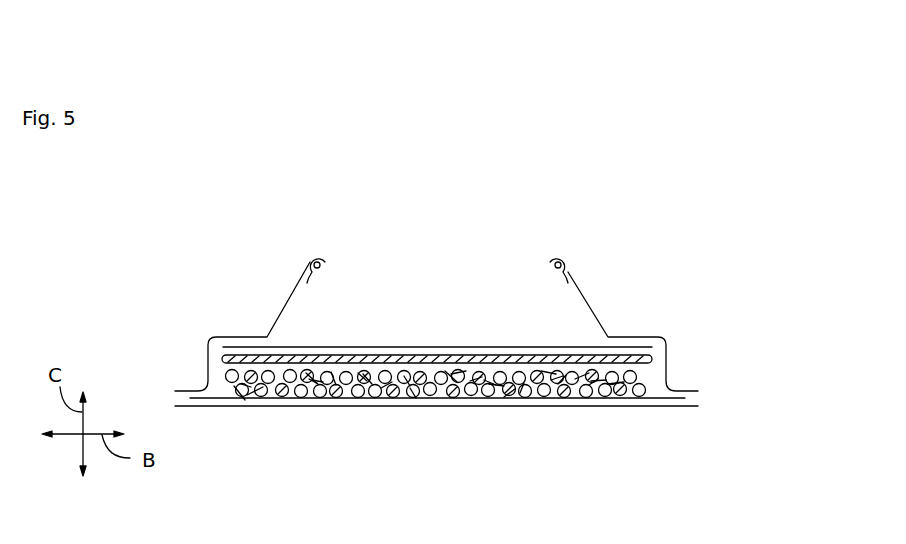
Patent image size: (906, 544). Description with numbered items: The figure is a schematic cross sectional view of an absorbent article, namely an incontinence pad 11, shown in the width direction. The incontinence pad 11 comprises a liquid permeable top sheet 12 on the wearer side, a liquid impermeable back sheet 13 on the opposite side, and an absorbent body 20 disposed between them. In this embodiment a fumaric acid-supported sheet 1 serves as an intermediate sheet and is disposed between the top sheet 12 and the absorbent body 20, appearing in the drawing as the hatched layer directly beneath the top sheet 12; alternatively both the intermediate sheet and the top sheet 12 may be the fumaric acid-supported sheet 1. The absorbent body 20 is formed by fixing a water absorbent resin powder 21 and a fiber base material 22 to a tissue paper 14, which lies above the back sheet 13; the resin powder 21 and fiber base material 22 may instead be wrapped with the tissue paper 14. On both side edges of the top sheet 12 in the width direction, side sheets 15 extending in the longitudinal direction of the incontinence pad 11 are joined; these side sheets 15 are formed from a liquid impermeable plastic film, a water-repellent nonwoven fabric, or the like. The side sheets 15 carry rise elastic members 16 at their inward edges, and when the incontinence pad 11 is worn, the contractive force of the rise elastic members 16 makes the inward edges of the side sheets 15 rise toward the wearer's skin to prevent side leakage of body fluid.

The fumaric acid-supported sheet 1 is at (488, 360).
The incontinence pad 11 is at (413, 294).
The liquid permeable top sheet 12 is at (345, 355).
The liquid impermeable back sheet 13 is at (692, 408).
The tissue paper 14 is at (657, 400).
The side sheets 15 is at (248, 335).
The rise elastic members 16 is at (309, 260).
The absorbent body 20 is at (652, 379).
The water absorbent resin powder 21 is at (262, 396).
The fiber base material 22 is at (242, 396).